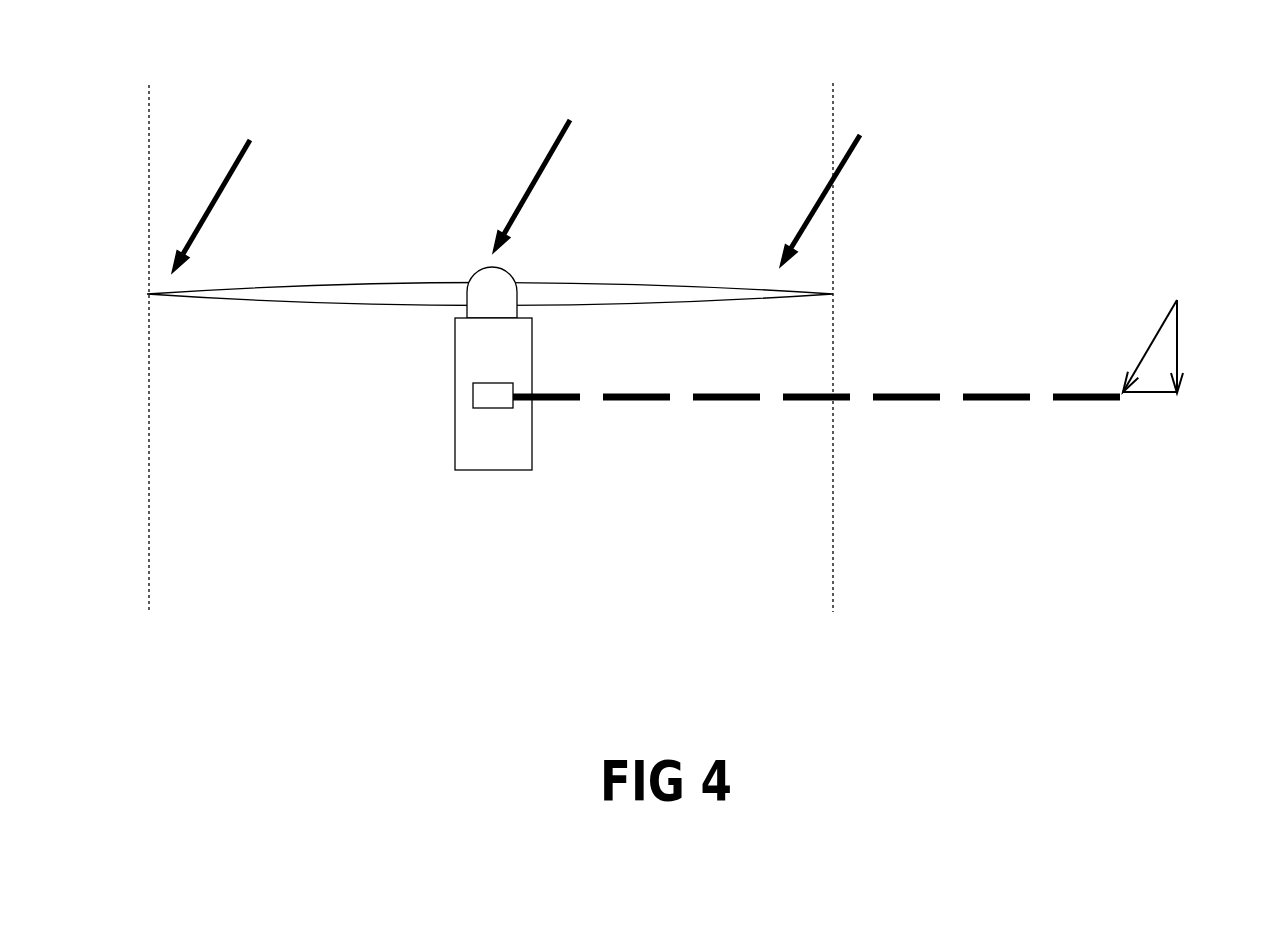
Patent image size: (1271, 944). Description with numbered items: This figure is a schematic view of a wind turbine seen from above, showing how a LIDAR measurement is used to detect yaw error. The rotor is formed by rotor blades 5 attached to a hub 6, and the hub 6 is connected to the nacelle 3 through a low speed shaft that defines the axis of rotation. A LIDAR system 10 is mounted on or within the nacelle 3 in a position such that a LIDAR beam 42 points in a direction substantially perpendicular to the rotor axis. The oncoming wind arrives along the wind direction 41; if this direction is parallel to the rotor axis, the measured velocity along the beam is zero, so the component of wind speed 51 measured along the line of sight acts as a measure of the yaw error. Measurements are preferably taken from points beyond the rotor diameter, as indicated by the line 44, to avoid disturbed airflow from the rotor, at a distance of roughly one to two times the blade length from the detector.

The wind turbine nacelle 3 is at (420, 358).
The rotor blade 5 is at (490, 260).
The hub 6 is at (492, 265).
The LIDAR system 10 is at (480, 430).
The wind direction 41 is at (516, 169).
The LIDAR beam 42 is at (945, 373).
The line beyond rotor diameter 44 is at (500, 315).
The component of wind speed measured 51 is at (1134, 409).